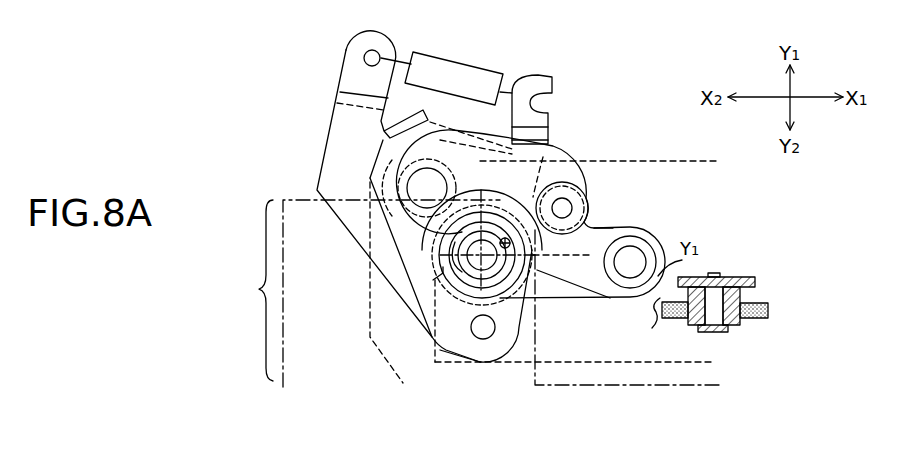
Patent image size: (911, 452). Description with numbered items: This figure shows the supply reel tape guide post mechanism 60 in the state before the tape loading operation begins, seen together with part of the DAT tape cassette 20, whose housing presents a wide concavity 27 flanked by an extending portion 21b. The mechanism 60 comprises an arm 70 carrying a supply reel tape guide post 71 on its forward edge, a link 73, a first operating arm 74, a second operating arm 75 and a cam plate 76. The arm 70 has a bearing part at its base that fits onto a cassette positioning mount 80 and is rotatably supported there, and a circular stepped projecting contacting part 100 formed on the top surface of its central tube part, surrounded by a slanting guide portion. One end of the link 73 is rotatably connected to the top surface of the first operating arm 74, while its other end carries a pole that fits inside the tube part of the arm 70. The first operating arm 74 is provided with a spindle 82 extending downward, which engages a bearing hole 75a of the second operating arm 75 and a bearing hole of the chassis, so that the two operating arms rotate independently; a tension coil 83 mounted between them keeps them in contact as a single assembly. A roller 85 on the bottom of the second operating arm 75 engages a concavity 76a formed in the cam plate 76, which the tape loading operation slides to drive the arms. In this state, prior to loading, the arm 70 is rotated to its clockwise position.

The supply reel tape guide post mechanism 60 is at (642, 35).
The second operating arm 75 is at (321, 156).
The tension coil 83 is at (462, 58).
The link 73 is at (558, 150).
The circular stepped projecting contacting part 100 is at (573, 200).
The arm 70 is at (606, 228).
The supply reel tape guide post 71 is at (650, 238).
The cassette positioning mount 80 is at (465, 258).
The first operating arm 74 is at (457, 255).
The concavity 76a is at (508, 173).
The cam plate 76 is at (680, 162).
The roller 85 is at (765, 310).
The spindle 82 is at (484, 333).
The bearing hole 75a is at (474, 346).
The wide concavity 27 is at (598, 345).
The DAT tape cassette 20 is at (287, 381).
The extending portion 21b is at (244, 290).